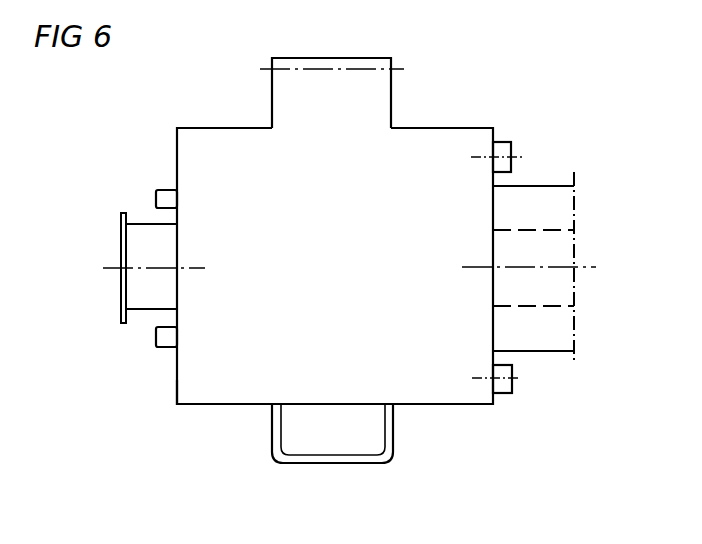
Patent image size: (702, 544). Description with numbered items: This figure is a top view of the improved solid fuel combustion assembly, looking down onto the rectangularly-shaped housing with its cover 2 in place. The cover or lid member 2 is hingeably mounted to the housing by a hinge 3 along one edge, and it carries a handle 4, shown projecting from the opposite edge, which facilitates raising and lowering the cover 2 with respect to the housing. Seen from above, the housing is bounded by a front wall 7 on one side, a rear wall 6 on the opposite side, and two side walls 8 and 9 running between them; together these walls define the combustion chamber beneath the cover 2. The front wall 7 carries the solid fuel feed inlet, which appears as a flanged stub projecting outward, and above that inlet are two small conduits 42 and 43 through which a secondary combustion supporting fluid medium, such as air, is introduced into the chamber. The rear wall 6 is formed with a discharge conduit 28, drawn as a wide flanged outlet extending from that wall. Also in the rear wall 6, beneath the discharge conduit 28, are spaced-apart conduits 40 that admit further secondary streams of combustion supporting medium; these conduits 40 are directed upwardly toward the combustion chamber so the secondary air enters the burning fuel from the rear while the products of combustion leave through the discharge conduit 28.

The cover 2 is at (236, 148).
The hinge 3 is at (349, 88).
The handle 4 is at (391, 427).
The rear wall 6 is at (495, 141).
The front wall 7 is at (175, 144).
The side wall 8 is at (209, 380).
The side wall 9 is at (437, 128).
The discharge conduit 28 is at (530, 332).
The conduits 40 is at (506, 143).
The conduit 42 is at (163, 198).
The conduit 43 is at (165, 338).